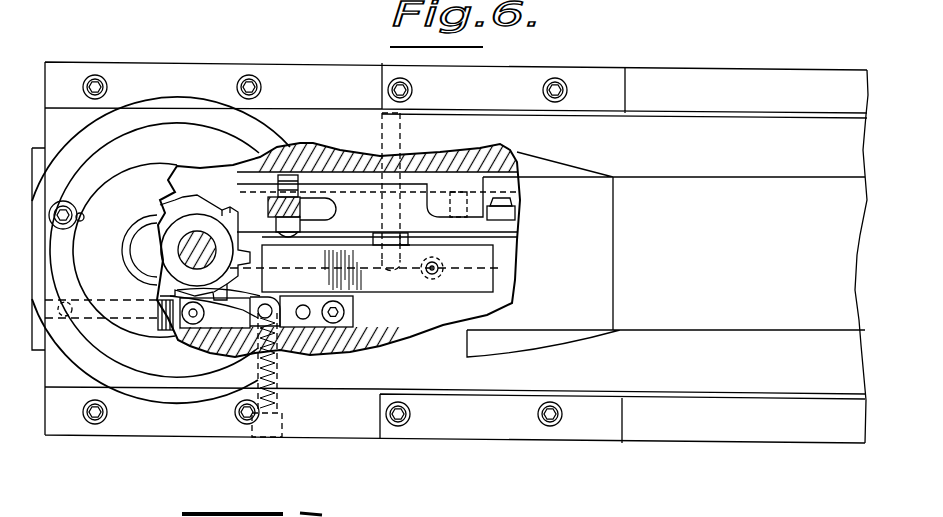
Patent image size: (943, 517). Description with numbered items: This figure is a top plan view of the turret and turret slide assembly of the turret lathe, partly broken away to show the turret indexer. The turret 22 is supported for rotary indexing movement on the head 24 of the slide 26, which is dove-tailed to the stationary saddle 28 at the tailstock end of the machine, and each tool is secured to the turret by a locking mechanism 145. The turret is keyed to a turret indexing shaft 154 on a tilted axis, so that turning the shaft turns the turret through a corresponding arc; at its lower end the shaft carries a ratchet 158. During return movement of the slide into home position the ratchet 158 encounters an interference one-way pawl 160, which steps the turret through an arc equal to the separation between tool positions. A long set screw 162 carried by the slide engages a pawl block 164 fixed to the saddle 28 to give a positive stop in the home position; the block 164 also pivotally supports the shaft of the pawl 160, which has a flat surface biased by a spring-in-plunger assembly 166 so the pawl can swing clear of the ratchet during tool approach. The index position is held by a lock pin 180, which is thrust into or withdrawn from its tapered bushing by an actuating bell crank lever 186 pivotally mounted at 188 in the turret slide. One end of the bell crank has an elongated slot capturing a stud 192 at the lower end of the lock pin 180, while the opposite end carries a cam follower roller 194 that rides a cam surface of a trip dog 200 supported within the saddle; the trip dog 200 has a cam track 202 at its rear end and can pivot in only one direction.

The turret 22 is at (188, 105).
The head 24 is at (58, 365).
The slide 26 is at (840, 348).
The saddle 28 is at (338, 425).
The locking mechanism 145 is at (73, 203).
The turret indexing shaft 154 is at (197, 250).
The ratchet 158 is at (173, 192).
The interference one-way pawl 160 is at (243, 310).
The long set screw 162 is at (163, 335).
The pawl block 164 is at (353, 312).
The spring-in-plunger assembly 166 is at (278, 377).
The lock pin 180 is at (267, 198).
The actuating bell crank lever 186 is at (353, 185).
The pivot 188 is at (428, 167).
The stud 192 is at (310, 233).
The cam follower roller 194 is at (510, 213).
The trip dog 200 is at (465, 182).
The cam track 202 is at (462, 208).